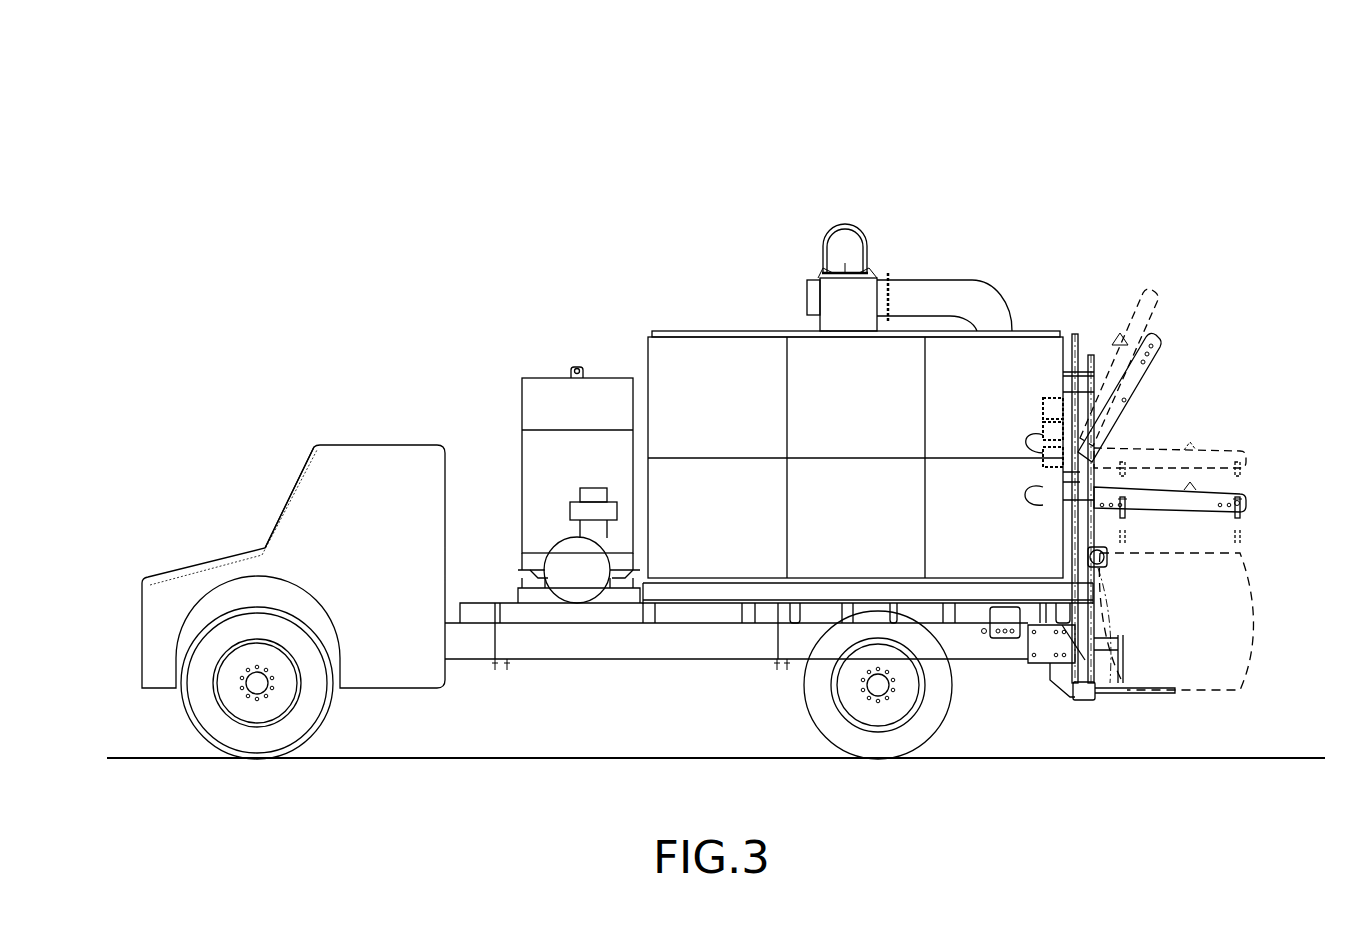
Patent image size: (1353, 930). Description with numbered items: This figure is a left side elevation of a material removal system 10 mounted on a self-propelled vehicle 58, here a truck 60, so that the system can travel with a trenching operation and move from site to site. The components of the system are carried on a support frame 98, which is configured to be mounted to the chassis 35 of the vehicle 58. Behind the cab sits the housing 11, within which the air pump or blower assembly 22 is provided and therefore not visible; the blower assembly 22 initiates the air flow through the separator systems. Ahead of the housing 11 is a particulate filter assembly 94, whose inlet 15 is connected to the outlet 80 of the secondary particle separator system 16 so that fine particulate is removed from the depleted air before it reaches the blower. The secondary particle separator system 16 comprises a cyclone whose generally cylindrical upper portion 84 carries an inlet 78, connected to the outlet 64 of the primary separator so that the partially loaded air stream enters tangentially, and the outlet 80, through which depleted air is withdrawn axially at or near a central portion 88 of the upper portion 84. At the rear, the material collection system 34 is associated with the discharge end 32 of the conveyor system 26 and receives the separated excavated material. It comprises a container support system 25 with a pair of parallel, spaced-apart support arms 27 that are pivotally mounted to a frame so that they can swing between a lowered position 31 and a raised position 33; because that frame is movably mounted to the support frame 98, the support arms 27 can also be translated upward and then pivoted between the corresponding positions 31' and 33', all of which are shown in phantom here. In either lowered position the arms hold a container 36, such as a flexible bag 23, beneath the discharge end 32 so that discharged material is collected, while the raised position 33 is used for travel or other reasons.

The material removal system 10 is at (1150, 148).
The housing 11 is at (510, 447).
The inlet of particulate filter assembly 15 is at (595, 490).
The secondary particle separator system 16 is at (792, 300).
The air pump or blower assembly 22 is at (522, 485).
The flexible bag 23 is at (1257, 650).
The container support system 25 is at (1232, 500).
The conveyor system 26 is at (1112, 583).
The support arms 27 is at (1212, 510).
The lowered position 31 is at (1202, 446).
The lowered position with frame raised 31' is at (1176, 421).
The material discharge end of conveyor system 32 is at (1108, 553).
The raised position 33 is at (1152, 378).
The raised position with frame raised 33' is at (1142, 331).
The material collection system 34 is at (1264, 497).
The chassis 35 is at (645, 660).
The container 36 is at (1270, 593).
The self-propelled vehicle 58 is at (284, 480).
The truck 60 is at (282, 522).
The outlet of primary particle separator system 64 is at (1005, 303).
The inlet of secondary particle separator system 78 is at (887, 277).
The outlet of secondary particle separator system 80 is at (828, 242).
The upper portion of secondary cyclone separator 84 is at (805, 315).
The central portion of upper portion 88 is at (815, 268).
The particulate filter assembly 94 is at (540, 540).
The support frame 98 is at (732, 615).